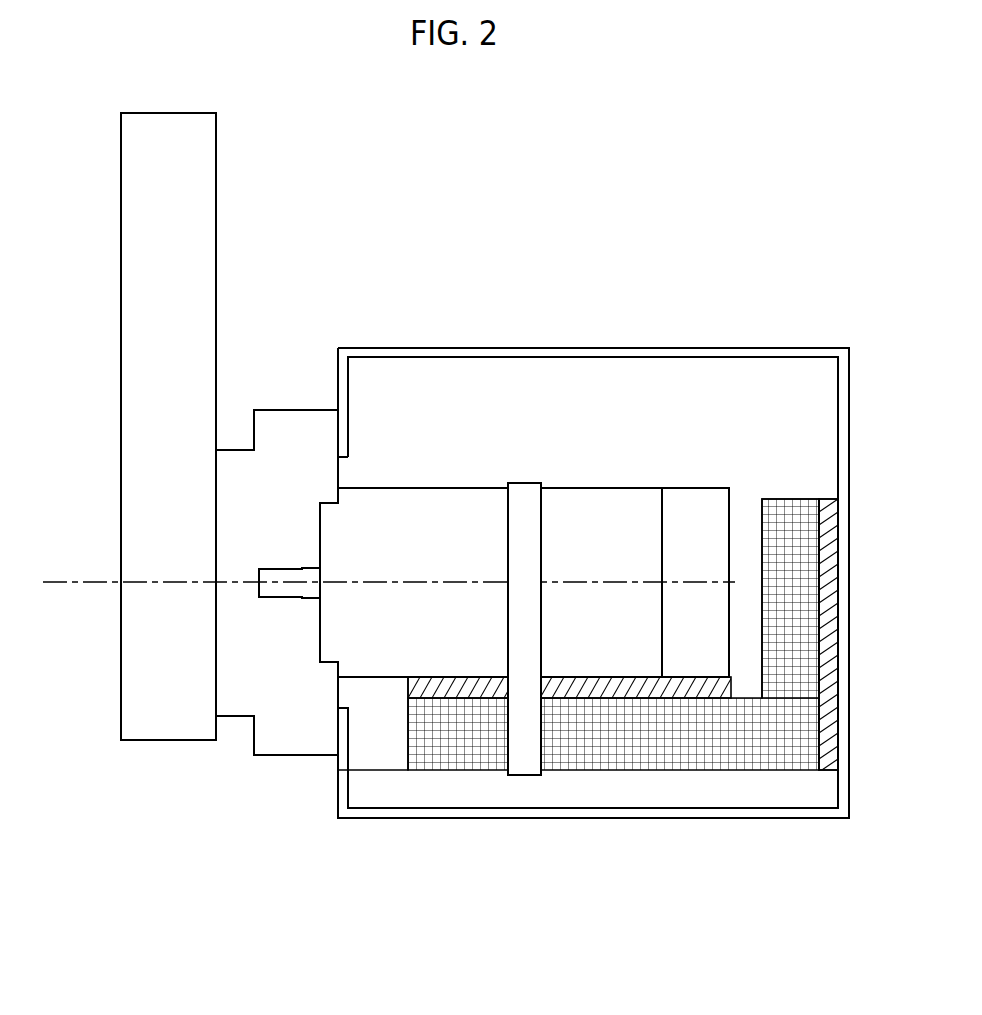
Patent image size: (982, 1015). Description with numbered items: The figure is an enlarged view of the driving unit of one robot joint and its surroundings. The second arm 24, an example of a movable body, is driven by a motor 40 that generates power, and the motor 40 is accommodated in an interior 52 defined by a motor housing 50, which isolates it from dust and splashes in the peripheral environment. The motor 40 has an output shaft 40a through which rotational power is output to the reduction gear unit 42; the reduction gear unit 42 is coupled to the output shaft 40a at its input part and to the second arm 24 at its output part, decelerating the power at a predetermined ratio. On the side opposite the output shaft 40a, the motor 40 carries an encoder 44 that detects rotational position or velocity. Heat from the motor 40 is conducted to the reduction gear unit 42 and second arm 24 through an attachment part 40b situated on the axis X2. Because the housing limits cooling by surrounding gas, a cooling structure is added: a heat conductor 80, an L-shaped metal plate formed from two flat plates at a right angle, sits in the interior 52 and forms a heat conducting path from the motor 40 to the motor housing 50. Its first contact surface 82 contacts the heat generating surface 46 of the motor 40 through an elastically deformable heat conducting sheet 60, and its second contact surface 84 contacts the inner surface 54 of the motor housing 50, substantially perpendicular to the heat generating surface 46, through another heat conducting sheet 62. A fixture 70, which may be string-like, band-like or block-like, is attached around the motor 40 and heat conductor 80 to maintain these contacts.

The axis X2 is at (80, 580).
The second arm 24 is at (216, 243).
The reduction gear unit 42 is at (285, 755).
The motor housing 50 is at (508, 348).
The interior 52 is at (386, 389).
The motor 40 is at (625, 487).
The encoder 44 is at (698, 487).
The output shaft 40a is at (282, 567).
The attachment part 40b is at (331, 650).
The heat generating surface 46 is at (362, 678).
The heat conducting sheet 60 is at (400, 690).
The first contact surface 82 is at (436, 690).
The heat conductor 80 is at (730, 771).
The second contact surface 84 is at (820, 683).
The heat conducting sheet 62 is at (826, 499).
The inner surface 54 is at (824, 597).
The fixture 70 is at (524, 776).